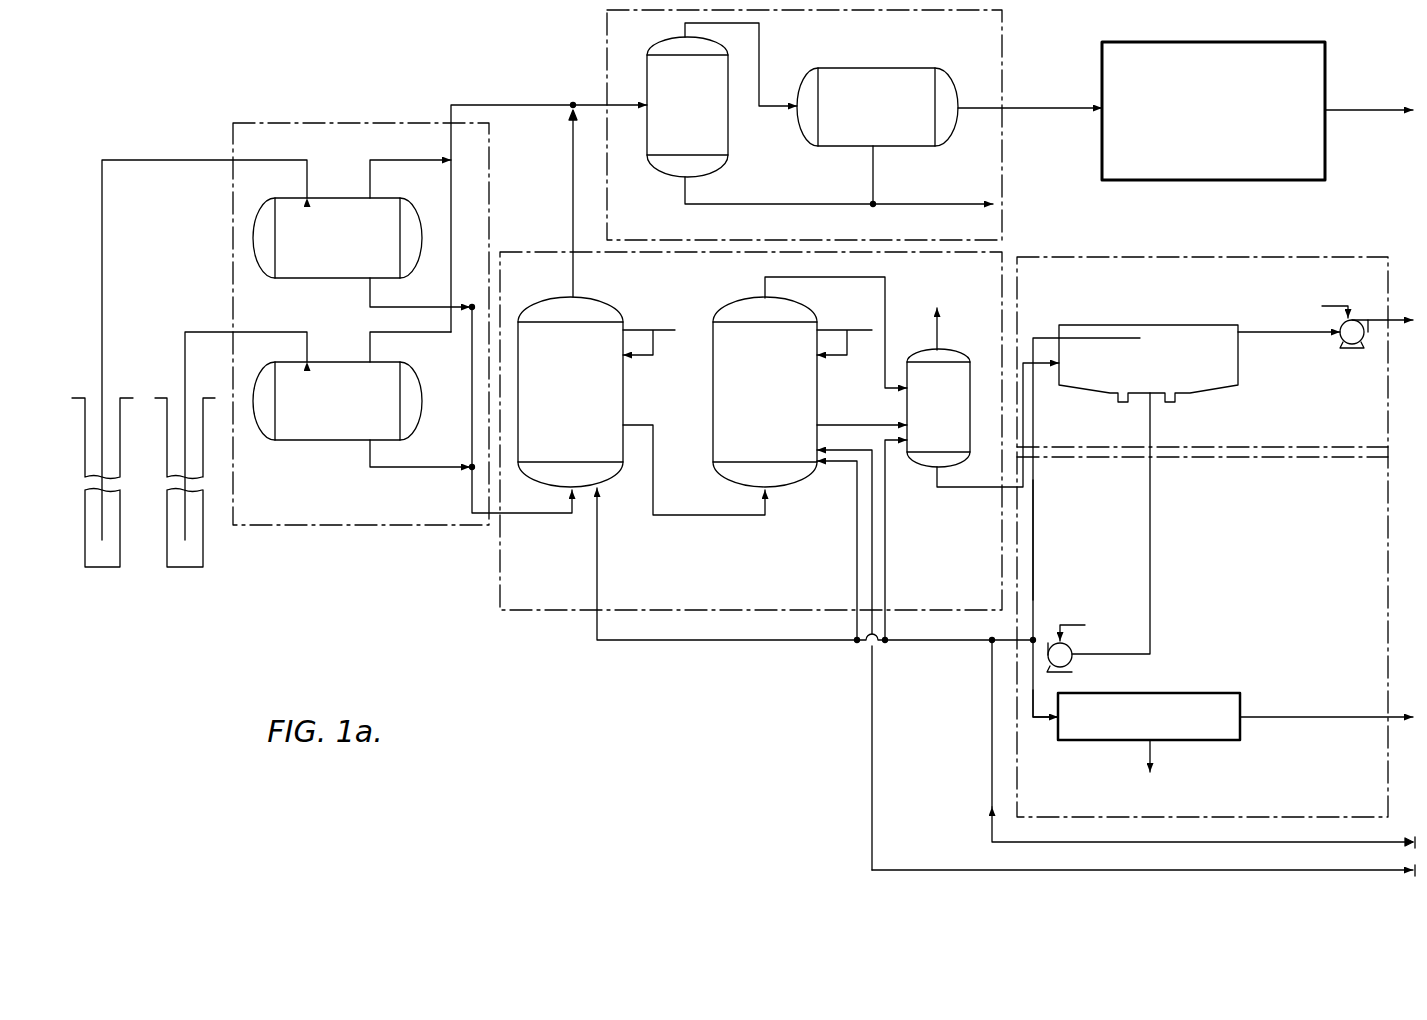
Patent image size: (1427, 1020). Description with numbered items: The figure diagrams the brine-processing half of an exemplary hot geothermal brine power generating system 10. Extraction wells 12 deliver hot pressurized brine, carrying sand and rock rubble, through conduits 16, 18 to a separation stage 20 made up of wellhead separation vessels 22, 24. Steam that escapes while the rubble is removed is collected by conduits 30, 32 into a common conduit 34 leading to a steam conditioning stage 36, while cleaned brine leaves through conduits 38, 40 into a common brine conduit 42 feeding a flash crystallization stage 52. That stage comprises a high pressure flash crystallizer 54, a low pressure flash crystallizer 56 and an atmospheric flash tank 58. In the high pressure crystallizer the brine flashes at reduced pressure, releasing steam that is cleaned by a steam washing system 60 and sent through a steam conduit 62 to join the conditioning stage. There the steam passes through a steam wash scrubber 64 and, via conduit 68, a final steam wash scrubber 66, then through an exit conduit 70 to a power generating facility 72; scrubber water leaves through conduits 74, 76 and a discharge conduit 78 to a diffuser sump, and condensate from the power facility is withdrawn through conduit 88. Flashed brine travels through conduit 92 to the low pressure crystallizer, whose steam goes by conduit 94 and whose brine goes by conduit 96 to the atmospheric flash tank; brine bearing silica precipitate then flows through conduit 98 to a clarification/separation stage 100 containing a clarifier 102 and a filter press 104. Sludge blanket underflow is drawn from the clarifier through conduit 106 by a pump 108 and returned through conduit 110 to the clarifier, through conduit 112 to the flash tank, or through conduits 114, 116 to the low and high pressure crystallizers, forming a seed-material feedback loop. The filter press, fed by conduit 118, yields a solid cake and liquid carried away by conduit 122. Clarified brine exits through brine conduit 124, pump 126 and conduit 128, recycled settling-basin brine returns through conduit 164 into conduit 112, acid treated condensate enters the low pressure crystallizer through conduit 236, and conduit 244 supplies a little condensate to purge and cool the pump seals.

The geothermal brine power generating system 10 is at (745, 735).
The extraction wells 12 is at (120, 561).
The conduit 16 is at (102, 214).
The conduit 18 is at (185, 348).
The separation stage 20 is at (307, 121).
The wellhead separation vessel 22 is at (315, 278).
The wellhead separation vessel 24 is at (315, 440).
The conduit 30 is at (402, 158).
The conduit 32 is at (408, 333).
The common conduit 34 is at (548, 108).
The steam conditioning stage 36 is at (607, 50).
The conduit 38 is at (372, 300).
The conduit 40 is at (372, 462).
The common brine conduit 42 is at (525, 517).
The flash crystallization stage 52 is at (545, 614).
The high pressure flash crystallizer 54 is at (623, 412).
The low pressure flash crystallizer 56 is at (817, 414).
The atmospheric flash tank 58 is at (955, 352).
The steam washing system 60 is at (636, 316).
The steam conduit 62 is at (573, 205).
The steam wash scrubber 64 is at (728, 150).
The final steam wash scrubber 66 is at (880, 68).
The conduit 68 is at (759, 47).
The exit conduit 70 is at (992, 108).
The power generating facility 72 is at (1158, 42).
The conduit 74 is at (790, 204).
The conduit 76 is at (873, 175).
The discharge conduit 78 is at (946, 205).
The condensate conduit 88 is at (1335, 110).
The conduit 92 is at (653, 493).
The conduit 94 is at (855, 277).
The conduit 96 is at (880, 428).
The conduit 98 is at (1033, 427).
The clarification/separation stage 100 is at (1163, 256).
The clarifier 102 is at (1170, 325).
The filter press 104 is at (1190, 693).
The conduit 106 is at (1150, 480).
The pump 108 is at (1075, 666).
The conduit 110 is at (1033, 539).
The conduit 112 is at (885, 547).
The conduit 114 is at (857, 592).
The conduit 116 is at (830, 642).
The conduit 118 is at (1038, 720).
The conduit 122 is at (1375, 720).
The brine conduit 124 is at (1305, 335).
The pump 126 is at (1340, 345).
The conduit 128 is at (1395, 322).
The conduit 164 is at (1358, 846).
The conduit 236 is at (1363, 874).
The conduit 244 is at (1093, 632).